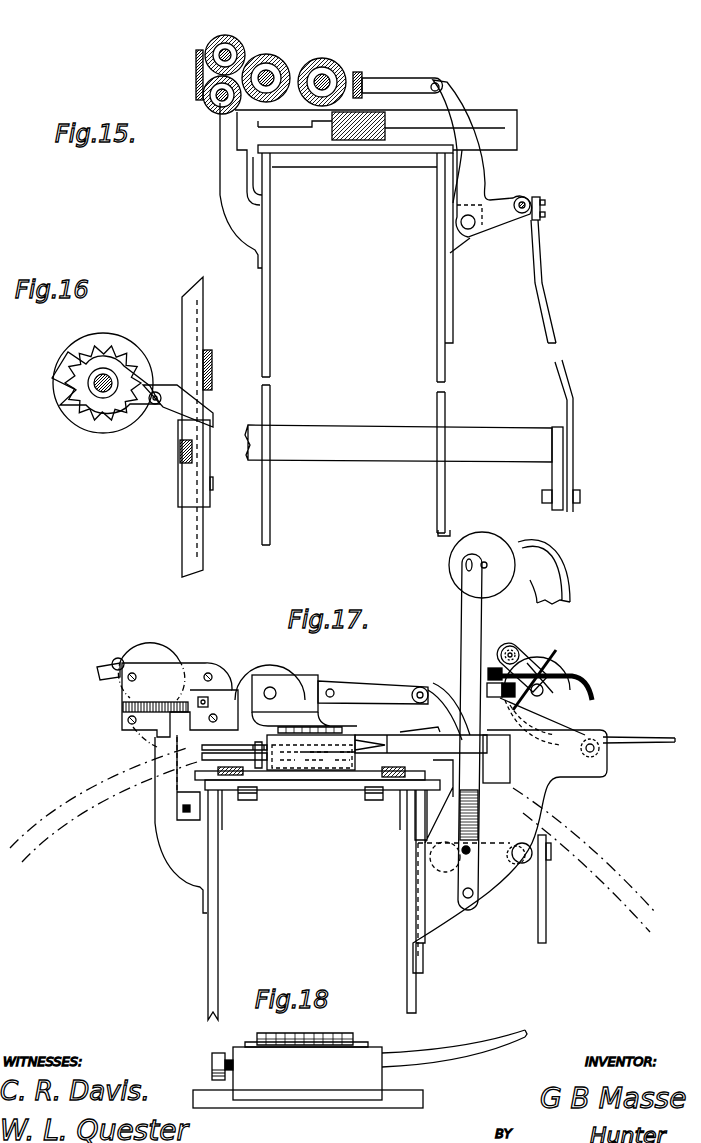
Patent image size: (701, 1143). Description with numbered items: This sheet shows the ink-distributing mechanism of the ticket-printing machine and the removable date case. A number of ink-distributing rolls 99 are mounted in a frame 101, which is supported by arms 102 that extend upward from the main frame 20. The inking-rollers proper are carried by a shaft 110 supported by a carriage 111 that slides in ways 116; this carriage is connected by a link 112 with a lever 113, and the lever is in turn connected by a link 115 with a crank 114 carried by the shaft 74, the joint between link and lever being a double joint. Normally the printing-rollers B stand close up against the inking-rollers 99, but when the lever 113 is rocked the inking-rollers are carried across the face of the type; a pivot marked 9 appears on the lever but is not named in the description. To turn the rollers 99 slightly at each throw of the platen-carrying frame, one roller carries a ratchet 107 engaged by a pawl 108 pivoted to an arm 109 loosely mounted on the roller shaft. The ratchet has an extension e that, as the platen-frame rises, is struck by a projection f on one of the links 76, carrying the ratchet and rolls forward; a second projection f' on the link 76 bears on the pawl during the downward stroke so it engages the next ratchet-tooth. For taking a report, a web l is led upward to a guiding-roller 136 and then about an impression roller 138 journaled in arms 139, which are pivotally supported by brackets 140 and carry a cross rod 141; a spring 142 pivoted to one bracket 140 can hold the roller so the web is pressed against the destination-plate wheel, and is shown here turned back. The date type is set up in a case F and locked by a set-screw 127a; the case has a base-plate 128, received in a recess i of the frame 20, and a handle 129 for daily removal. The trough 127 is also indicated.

In FIG. 15, the ink-distributing rolls 99 is at (236, 44).
In FIG. 17, the ink-distributing rolls 99 is at (187, 641).
In FIG. 15, the frame 101 is at (195, 60).
In FIG. 17, the frame 101 is at (190, 672).
In FIG. 15, the printing-rollers B is at (322, 58).
In FIG. 17, the printing-rollers B is at (276, 672).
In FIG. 15, the shaft 110 is at (332, 62).
In FIG. 17, the shaft 110 is at (277, 693).
In FIG. 15, the carriage 111 is at (358, 74).
In FIG. 17, the carriage 111 is at (311, 740).
In FIG. 15, the link 112 is at (400, 83).
In FIG. 17, the link 112 is at (373, 692).
In FIG. 15, the ways 116 is at (376, 130).
In FIG. 17, the ways 116 is at (496, 759).
In FIG. 15, the lever 113 is at (478, 188).
In FIG. 17, the lever 113 is at (435, 705).
In FIG. 15, the pivot stud 9 is at (533, 200).
In FIG. 17, the pivot stud 9 is at (535, 867).
In FIG. 15, the arms 102 is at (258, 201).
In FIG. 17, the arms 102 is at (181, 824).
In FIG. 15, the main frame 20 is at (272, 293).
In FIG. 17, the main frame 20 is at (219, 885).
In FIG. 15, the link 115 is at (546, 318).
In FIG. 15, the shaft 74 is at (398, 443).
In FIG. 15, the crank 114 is at (548, 479).
In FIG. 16, the ratchet 107 is at (117, 352).
In FIG. 16, the pawl 108 is at (157, 378).
In FIG. 16, the arm 109 is at (137, 389).
In FIG. 16, the link 76 is at (196, 323).
In FIG. 16, the extension e is at (213, 417).
In FIG. 16, the second projection f' is at (222, 360).
In FIG. 16, the projection f is at (168, 450).
In FIG. 17, the guiding-roller 136 is at (482, 565).
In FIG. 17, the web l is at (563, 598).
In FIG. 17, the arms 139 is at (527, 653).
In FIG. 17, the cross rod or bar 141 is at (556, 654).
In FIG. 17, the impression cylinder or roller 138 is at (560, 671).
In FIG. 17, the spring 142 is at (592, 693).
In FIG. 17, the brackets 140 is at (510, 851).
In FIG. 17, the handle 129 is at (410, 723).
In FIG. 18, the handle 129 is at (483, 1039).
In FIG. 17, the set-screw 127a is at (258, 752).
In FIG. 17, the base-plate 128 is at (330, 779).
In FIG. 18, the base-plate 128 is at (228, 1093).
In FIG. 17, the case F is at (322, 758).
In FIG. 18, the case F is at (307, 1066).
In FIG. 17, the recess i is at (382, 777).
In FIG. 18, the trough 127 is at (212, 1060).